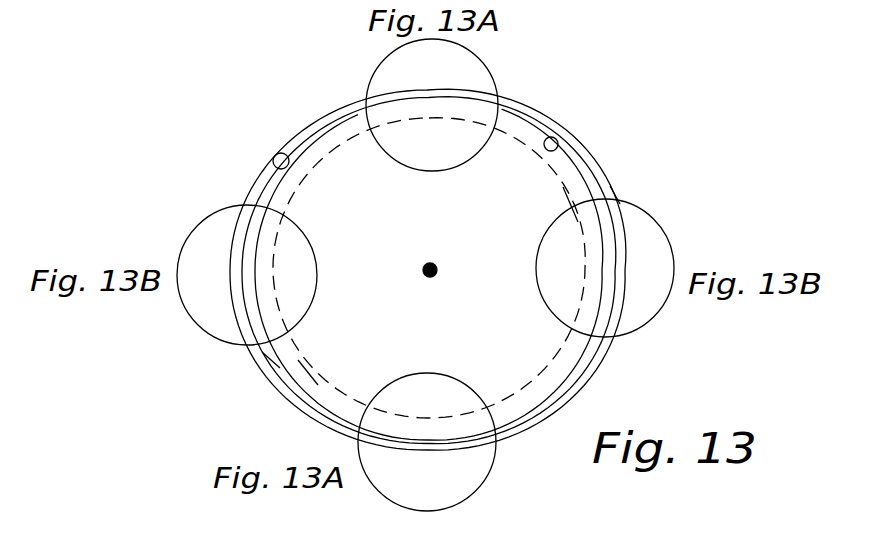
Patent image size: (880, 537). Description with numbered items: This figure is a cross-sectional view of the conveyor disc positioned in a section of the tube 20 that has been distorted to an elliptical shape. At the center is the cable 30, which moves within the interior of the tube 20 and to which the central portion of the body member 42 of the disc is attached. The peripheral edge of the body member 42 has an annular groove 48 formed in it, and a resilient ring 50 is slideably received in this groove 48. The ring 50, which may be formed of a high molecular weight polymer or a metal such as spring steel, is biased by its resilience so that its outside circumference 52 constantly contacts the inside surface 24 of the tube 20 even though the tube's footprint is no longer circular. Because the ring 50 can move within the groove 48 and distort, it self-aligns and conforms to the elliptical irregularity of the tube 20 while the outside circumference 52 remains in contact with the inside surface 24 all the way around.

The tube 20 is at (257, 176).
The inside surface 24 is at (274, 155).
The cable 30 is at (430, 278).
The body member 42 is at (428, 231).
The annular groove 48 is at (563, 347).
The resilient ring 50 is at (612, 190).
The outside circumference 52 is at (585, 196).